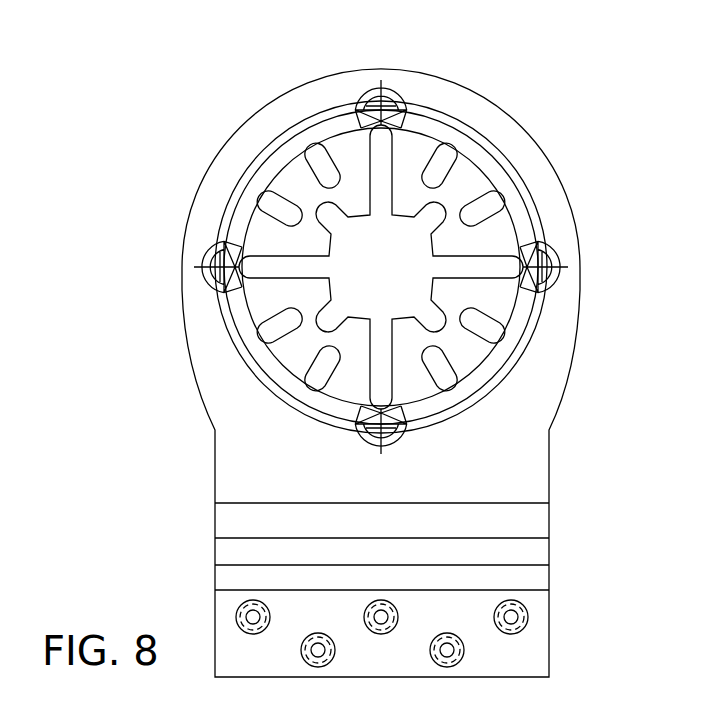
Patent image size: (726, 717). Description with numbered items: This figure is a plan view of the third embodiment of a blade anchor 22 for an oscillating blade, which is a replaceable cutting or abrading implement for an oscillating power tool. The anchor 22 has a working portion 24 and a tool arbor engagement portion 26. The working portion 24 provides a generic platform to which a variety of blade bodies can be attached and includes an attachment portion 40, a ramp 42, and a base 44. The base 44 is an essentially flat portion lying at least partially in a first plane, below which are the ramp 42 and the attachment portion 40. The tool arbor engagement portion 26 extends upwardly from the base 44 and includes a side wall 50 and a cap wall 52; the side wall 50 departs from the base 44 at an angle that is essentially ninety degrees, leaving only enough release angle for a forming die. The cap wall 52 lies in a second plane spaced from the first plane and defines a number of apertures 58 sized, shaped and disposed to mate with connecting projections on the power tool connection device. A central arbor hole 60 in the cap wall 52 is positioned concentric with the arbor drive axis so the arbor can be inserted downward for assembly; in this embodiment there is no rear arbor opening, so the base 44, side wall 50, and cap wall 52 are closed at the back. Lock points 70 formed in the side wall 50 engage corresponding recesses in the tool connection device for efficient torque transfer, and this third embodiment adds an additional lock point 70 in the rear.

The anchor 22 is at (397, 357).
The working portion 24 is at (452, 593).
The tool arbor engagement portion 26 is at (384, 255).
The attachment portion 40 is at (533, 652).
The ramp 42 is at (537, 547).
The base 44 is at (303, 95).
The side wall 50 is at (498, 178).
The cap wall 52 is at (381, 277).
The apertures 58 is at (498, 200).
The central arbor hole 60 is at (367, 281).
The lock point 70 is at (395, 96).